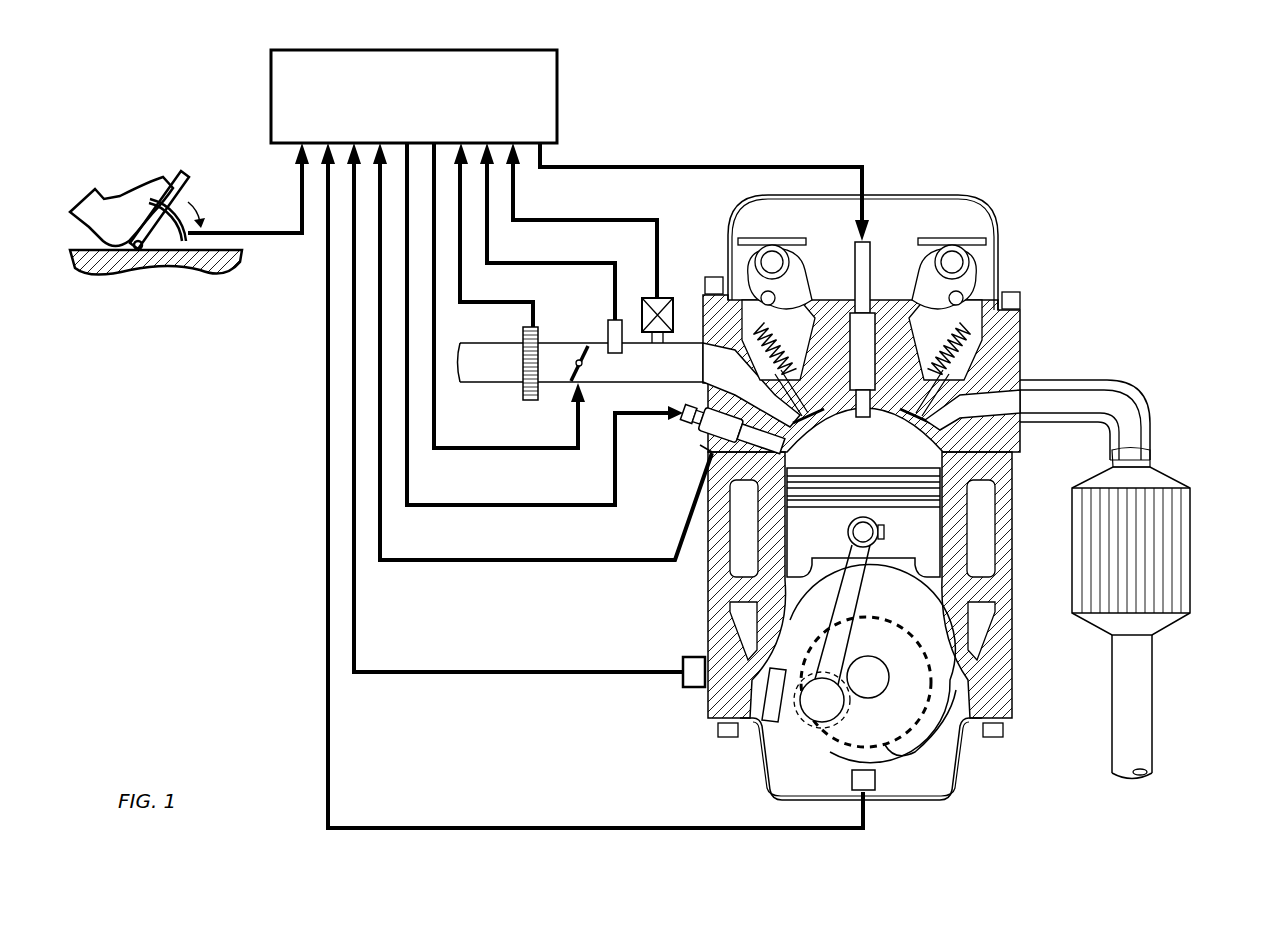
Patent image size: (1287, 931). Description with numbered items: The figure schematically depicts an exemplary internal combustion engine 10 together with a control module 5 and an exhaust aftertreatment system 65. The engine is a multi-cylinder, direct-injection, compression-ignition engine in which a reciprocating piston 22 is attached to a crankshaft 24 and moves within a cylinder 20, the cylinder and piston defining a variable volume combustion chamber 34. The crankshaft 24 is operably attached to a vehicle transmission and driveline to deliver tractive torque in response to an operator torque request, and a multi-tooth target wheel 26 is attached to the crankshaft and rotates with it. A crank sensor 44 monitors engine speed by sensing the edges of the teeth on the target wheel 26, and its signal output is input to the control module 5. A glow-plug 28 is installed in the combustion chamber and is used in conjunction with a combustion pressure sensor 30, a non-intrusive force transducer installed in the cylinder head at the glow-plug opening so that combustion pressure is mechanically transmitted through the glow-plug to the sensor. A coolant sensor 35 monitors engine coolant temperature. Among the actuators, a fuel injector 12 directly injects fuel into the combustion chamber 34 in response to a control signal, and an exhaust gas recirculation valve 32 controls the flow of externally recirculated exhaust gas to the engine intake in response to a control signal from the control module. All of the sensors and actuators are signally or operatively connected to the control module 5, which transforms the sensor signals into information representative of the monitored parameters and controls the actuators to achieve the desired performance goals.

The control module 5 is at (533, 58).
The internal combustion engine 10 is at (980, 213).
The fuel injector 12 is at (867, 257).
The cylinder 20 is at (930, 432).
The piston 22 is at (831, 538).
The crankshaft 24 is at (940, 686).
The multi-tooth target wheel 26 is at (903, 698).
The glow-plug 28 is at (638, 413).
The combustion pressure sensor 30 is at (640, 562).
The exhaust gas recirculation valve 32 is at (667, 297).
The combustion chamber 34 is at (873, 460).
The coolant sensor 35 is at (643, 674).
The crank sensor 44 is at (870, 780).
The exhaust aftertreatment system 65 is at (1167, 485).